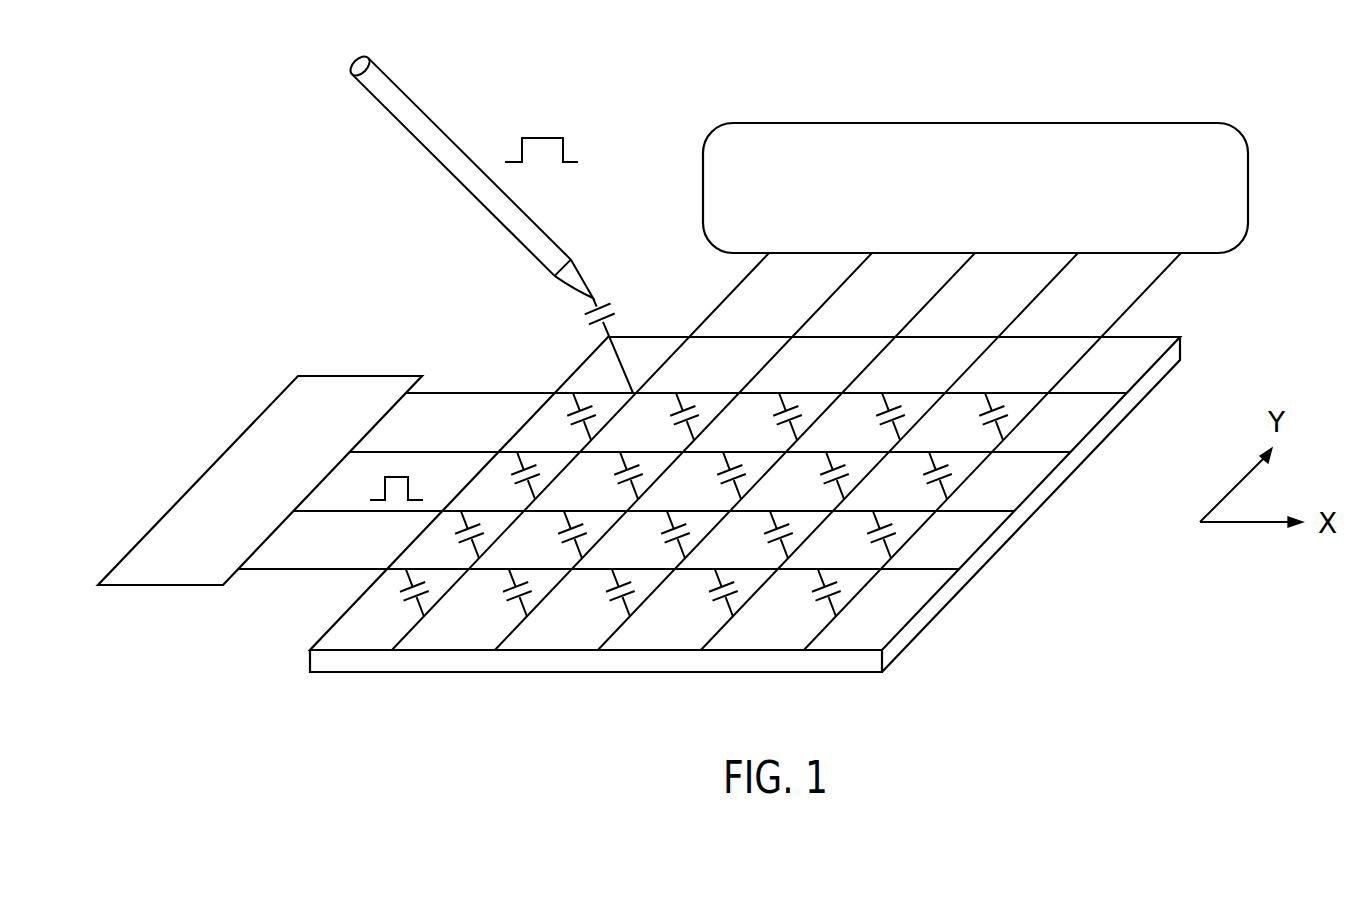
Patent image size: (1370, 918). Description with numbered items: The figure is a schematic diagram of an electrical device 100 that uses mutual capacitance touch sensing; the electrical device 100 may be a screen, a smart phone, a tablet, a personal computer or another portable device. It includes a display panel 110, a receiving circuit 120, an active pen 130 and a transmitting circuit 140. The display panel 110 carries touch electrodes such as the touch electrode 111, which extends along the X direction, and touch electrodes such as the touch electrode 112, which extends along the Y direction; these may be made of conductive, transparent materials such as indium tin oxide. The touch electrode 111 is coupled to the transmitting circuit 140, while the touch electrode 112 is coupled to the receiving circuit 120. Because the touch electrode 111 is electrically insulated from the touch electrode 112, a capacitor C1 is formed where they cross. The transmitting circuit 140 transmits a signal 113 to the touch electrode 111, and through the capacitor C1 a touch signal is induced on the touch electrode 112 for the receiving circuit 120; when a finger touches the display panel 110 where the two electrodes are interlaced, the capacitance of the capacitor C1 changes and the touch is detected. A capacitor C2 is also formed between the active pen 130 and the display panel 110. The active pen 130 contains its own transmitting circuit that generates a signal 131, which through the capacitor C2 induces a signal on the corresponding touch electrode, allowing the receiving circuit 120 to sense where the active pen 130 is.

The electrical device 100 is at (188, 113).
The display panel 110 is at (1078, 453).
The touch electrode 111 is at (980, 511).
The touch electrode 112 is at (1086, 354).
The signal 113 is at (397, 475).
The receiving circuit 120 is at (952, 221).
The active pen 130 is at (395, 85).
The signal 131 is at (540, 137).
The transmitting circuit 140 is at (160, 588).
The capacitor C1 is at (704, 504).
The capacitor C2 is at (620, 340).